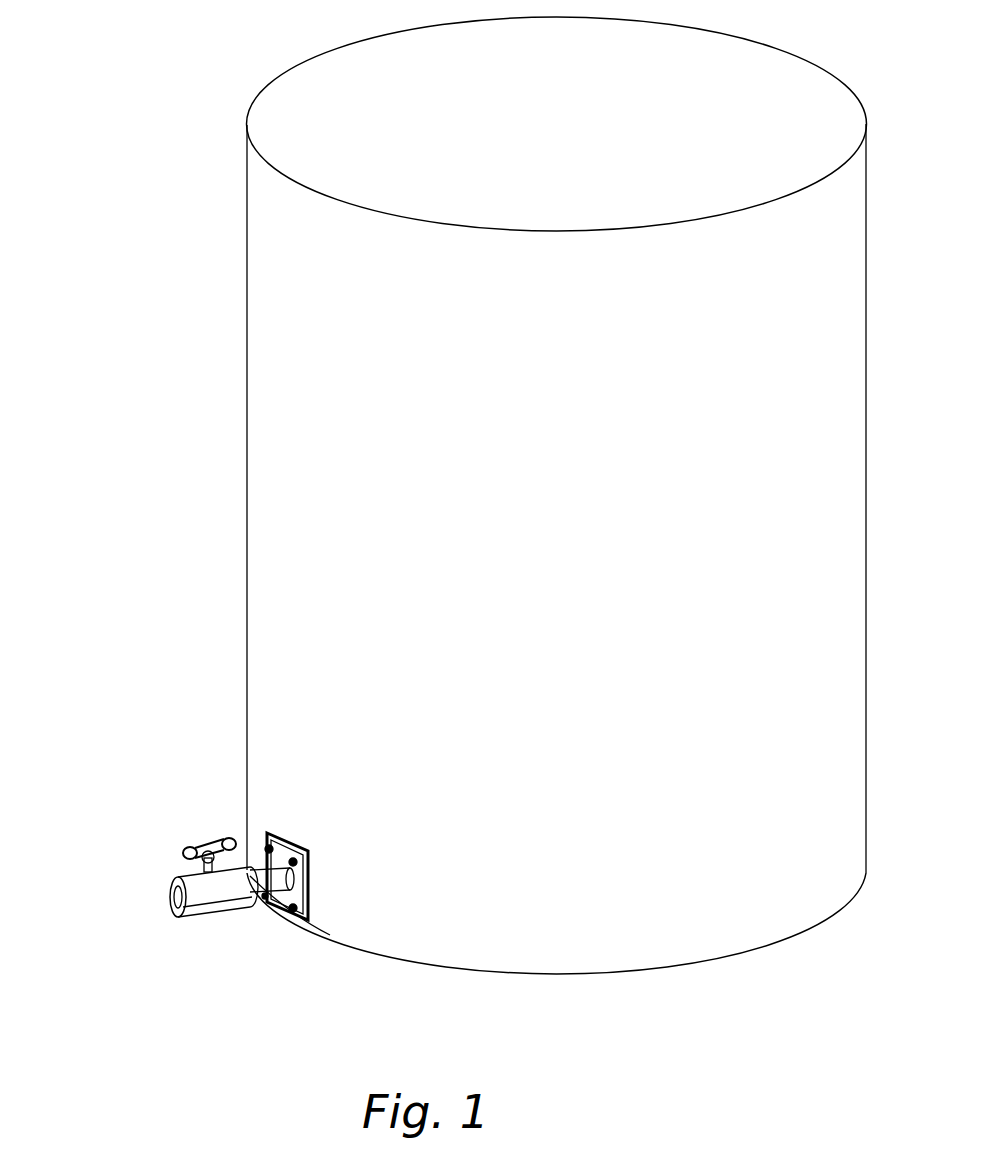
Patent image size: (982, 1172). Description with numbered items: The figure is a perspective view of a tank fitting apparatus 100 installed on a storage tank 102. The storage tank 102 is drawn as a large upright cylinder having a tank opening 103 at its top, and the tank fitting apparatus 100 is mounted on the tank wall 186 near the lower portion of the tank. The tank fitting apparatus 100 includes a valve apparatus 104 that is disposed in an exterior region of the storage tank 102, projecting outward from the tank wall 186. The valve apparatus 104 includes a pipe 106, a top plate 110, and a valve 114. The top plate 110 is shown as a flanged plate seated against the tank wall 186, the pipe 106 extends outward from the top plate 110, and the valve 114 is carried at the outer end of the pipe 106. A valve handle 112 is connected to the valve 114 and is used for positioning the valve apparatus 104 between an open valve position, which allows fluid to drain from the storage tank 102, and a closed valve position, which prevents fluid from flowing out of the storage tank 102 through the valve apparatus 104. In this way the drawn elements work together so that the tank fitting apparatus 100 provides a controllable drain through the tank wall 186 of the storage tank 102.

The tank fitting apparatus 100 is at (124, 762).
The storage tank 102 is at (226, 281).
The tank opening 103 is at (344, 50).
The valve apparatus 104 is at (205, 893).
The pipe 106 is at (262, 893).
The top plate 110 is at (285, 843).
The valve handle 112 is at (195, 847).
The valve 114 is at (197, 920).
The tank wall 186 is at (327, 888).